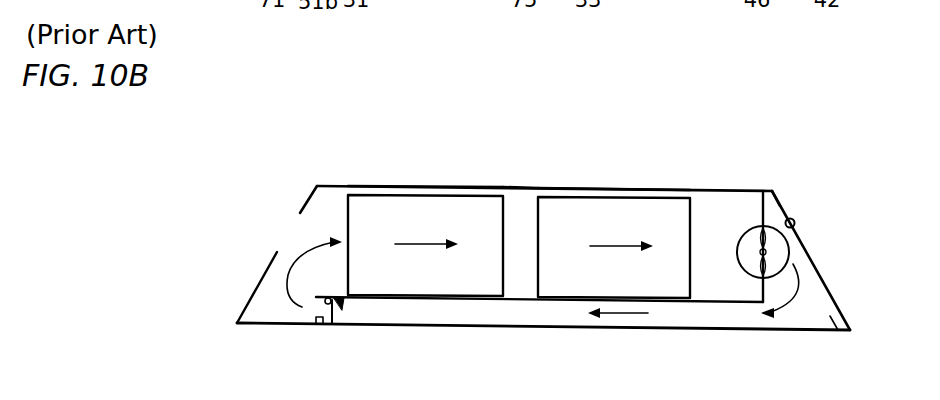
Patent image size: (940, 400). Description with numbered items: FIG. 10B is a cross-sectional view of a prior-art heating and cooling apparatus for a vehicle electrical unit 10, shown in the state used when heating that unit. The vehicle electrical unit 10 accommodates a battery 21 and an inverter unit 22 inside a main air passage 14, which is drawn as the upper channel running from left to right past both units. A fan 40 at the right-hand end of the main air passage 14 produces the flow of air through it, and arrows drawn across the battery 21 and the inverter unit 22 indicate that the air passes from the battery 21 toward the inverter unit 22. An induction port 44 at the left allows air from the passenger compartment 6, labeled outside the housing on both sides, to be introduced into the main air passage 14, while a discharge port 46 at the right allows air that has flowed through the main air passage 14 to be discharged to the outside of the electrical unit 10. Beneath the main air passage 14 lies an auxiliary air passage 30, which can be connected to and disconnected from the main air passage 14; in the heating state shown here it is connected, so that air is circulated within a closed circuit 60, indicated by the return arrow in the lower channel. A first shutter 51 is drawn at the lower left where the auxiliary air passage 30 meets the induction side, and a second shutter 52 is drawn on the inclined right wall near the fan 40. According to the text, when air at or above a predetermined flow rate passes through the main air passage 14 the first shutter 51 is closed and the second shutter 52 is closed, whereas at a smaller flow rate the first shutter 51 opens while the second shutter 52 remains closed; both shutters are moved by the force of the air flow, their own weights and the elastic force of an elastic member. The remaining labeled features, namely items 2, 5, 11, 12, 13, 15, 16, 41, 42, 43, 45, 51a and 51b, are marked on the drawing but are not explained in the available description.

The image forming apparatus 2 is at (571, 134).
The bottom plate 5 is at (464, 327).
The passenger compartment 6 is at (222, 194).
The vehicle electrical unit 10 is at (478, 187).
The second housing portion 11 is at (598, 188).
The partition 12 is at (520, 187).
The inner bottom wall 13 is at (518, 301).
The main air passage 14 is at (713, 210).
The upper rear corner 15 is at (778, 192).
The upper front corner 16 is at (328, 207).
The battery 21 is at (401, 195).
The inverter unit 22 is at (636, 197).
The auxiliary air passage 30 is at (565, 314).
The fan 40 is at (748, 231).
The front lower portion 41 is at (277, 298).
The rear lower corner 42 is at (838, 332).
The front inclined wall 43 is at (258, 282).
The induction port 44 is at (293, 222).
The rear inclined wall 45 is at (836, 304).
The discharge port 46 is at (812, 280).
The first shutter 51 is at (331, 324).
The shutter flap 51a is at (338, 301).
The shutter stopper 51b is at (312, 325).
The second shutter 52 is at (808, 250).
The closed circuit 60 is at (676, 313).